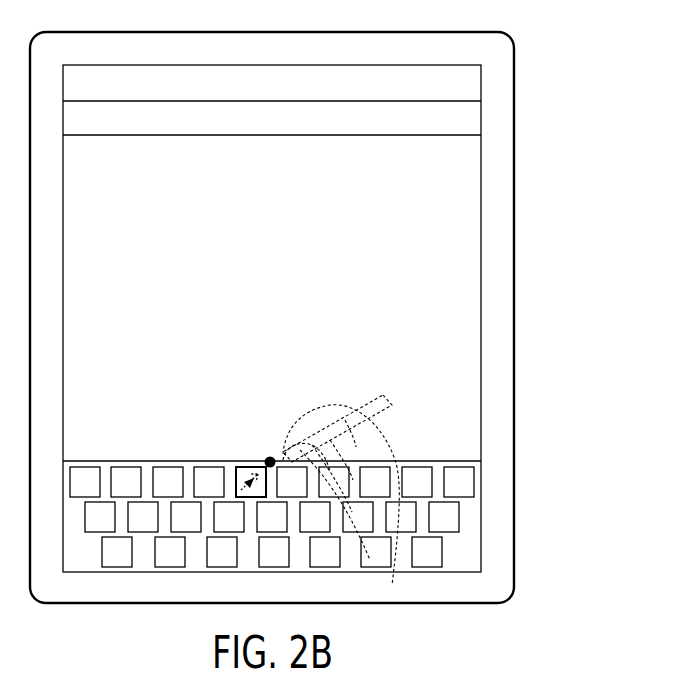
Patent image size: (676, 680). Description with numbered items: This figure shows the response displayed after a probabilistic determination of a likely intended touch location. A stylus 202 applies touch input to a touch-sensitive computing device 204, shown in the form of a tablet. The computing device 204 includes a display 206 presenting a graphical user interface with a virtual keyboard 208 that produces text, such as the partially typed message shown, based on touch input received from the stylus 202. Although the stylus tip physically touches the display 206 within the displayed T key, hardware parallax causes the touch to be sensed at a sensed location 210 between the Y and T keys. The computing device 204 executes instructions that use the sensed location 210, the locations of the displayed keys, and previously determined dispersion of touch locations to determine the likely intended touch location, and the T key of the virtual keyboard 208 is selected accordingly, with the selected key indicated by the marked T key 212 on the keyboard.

The stylus 202 is at (388, 400).
The touch-sensitive computing device 204 is at (515, 50).
The display 206 is at (455, 181).
The virtual keyboard 208 is at (170, 444).
The sensed location 210 is at (268, 457).
The selected key indicator 212 is at (262, 468).